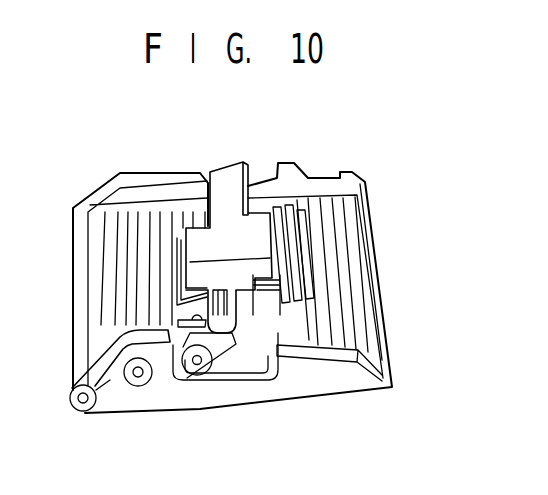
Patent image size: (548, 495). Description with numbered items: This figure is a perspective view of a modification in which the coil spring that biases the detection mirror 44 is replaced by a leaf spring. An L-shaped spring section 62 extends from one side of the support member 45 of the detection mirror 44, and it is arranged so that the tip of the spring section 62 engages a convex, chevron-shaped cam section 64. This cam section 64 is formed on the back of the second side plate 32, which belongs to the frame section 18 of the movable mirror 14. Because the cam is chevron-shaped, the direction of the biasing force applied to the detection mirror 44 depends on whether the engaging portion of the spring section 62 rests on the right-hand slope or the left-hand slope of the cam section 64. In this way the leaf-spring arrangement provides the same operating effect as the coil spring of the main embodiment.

The movable mirror 14 is at (393, 299).
The frame section 18 is at (368, 340).
The detection mirror 44 is at (231, 165).
The cam section 64 is at (128, 320).
The spring section 62 is at (208, 340).
The support member 45 is at (247, 340).
The second side plate 32 is at (102, 360).